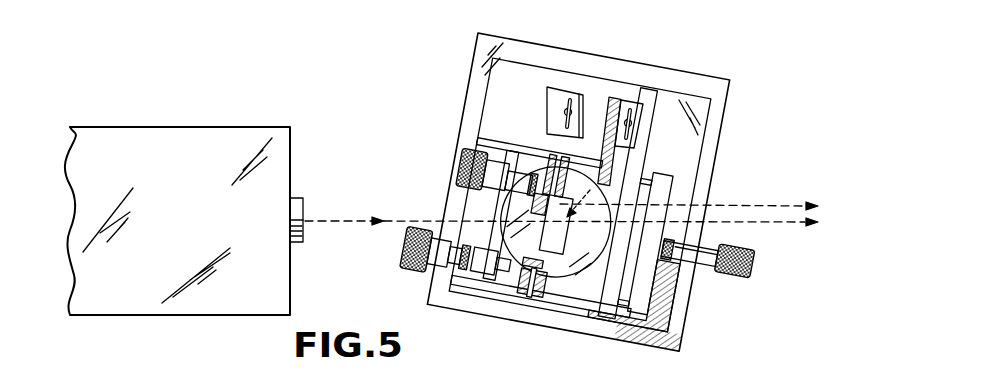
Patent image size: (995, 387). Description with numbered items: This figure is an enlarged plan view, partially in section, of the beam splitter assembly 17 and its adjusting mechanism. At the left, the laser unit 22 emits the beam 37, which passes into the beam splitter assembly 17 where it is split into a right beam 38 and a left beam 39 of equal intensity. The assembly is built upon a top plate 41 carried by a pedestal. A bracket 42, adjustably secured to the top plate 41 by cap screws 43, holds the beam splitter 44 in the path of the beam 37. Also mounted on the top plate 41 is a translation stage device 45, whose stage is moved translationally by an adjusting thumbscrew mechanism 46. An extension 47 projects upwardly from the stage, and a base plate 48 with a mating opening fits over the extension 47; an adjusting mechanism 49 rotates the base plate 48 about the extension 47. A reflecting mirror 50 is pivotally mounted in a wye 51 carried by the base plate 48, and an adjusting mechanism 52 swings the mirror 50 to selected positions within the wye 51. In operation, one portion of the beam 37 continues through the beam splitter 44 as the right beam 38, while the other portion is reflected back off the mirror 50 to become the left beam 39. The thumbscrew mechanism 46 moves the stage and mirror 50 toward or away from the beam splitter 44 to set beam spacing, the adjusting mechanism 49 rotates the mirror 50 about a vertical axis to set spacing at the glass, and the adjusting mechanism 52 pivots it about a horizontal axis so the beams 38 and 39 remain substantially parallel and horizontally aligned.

The beam splitter assembly 17 is at (445, 180).
The laser unit 22 is at (148, 132).
The beam 37 is at (327, 220).
The right beam 38 is at (795, 225).
The left beam 39 is at (770, 162).
The top plate 41 is at (546, 73).
The bracket 42 is at (610, 104).
The cap screws 43 is at (570, 108).
The beam splitter 44 is at (578, 248).
The translation stage device 45 is at (661, 266).
The adjusting thumbscrew mechanism 46 is at (740, 246).
The extension 47 is at (548, 270).
The base plate 48 is at (472, 280).
The adjusting mechanism 49 is at (430, 265).
The reflecting mirror 50 is at (515, 177).
The wye 51 is at (507, 287).
The adjusting mechanism 52 is at (497, 163).